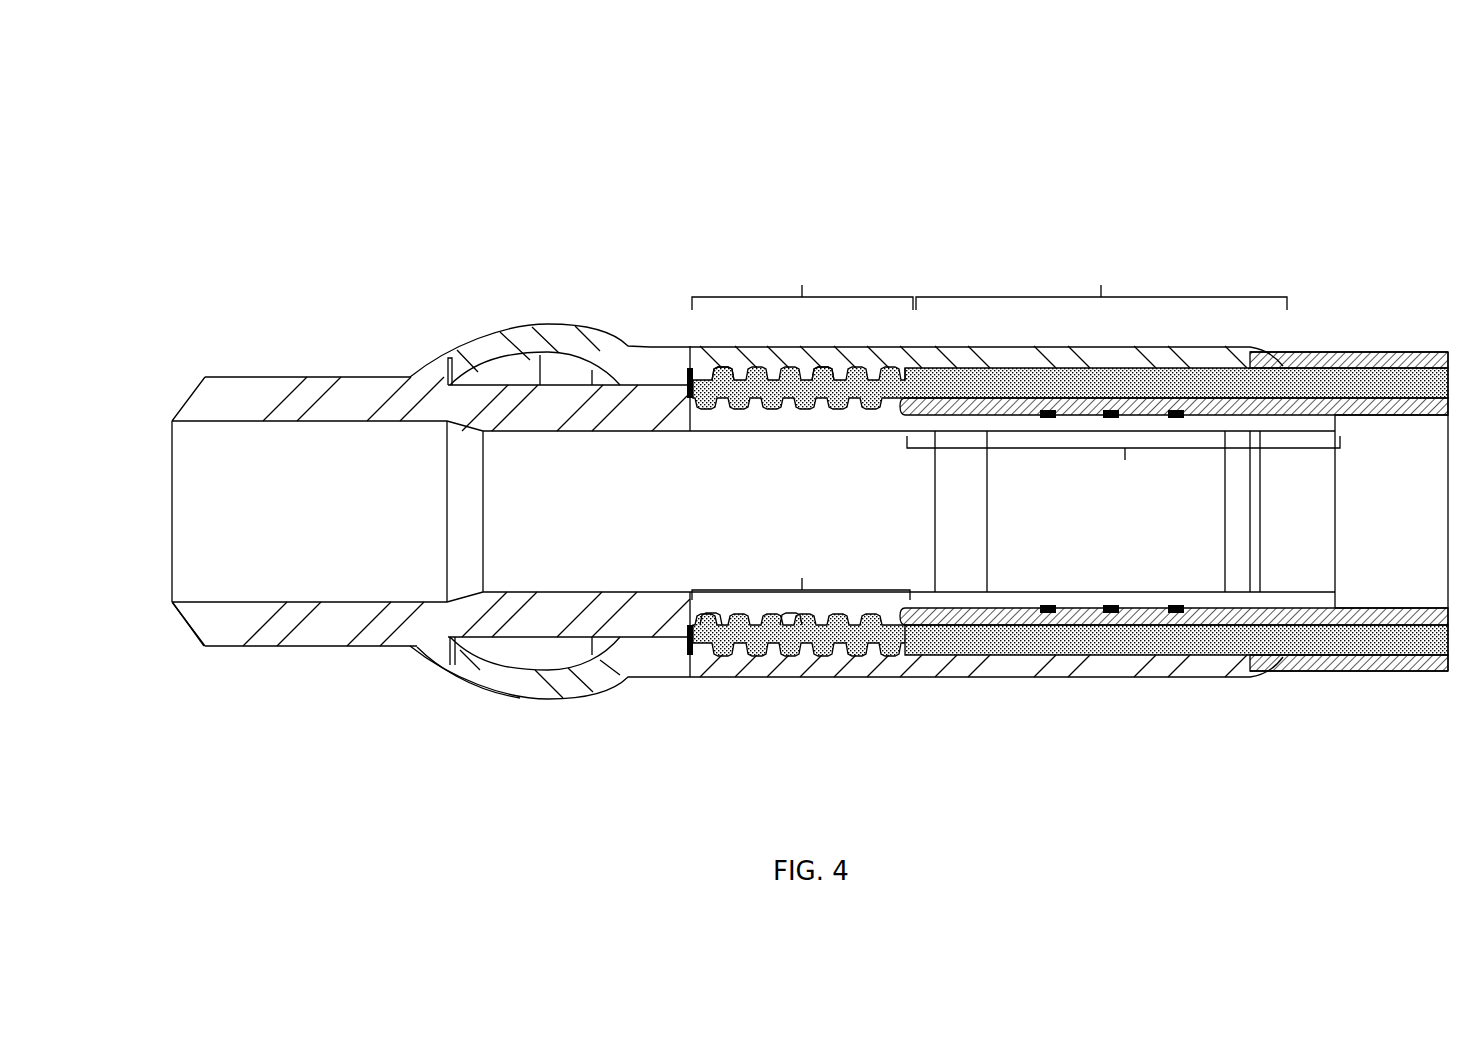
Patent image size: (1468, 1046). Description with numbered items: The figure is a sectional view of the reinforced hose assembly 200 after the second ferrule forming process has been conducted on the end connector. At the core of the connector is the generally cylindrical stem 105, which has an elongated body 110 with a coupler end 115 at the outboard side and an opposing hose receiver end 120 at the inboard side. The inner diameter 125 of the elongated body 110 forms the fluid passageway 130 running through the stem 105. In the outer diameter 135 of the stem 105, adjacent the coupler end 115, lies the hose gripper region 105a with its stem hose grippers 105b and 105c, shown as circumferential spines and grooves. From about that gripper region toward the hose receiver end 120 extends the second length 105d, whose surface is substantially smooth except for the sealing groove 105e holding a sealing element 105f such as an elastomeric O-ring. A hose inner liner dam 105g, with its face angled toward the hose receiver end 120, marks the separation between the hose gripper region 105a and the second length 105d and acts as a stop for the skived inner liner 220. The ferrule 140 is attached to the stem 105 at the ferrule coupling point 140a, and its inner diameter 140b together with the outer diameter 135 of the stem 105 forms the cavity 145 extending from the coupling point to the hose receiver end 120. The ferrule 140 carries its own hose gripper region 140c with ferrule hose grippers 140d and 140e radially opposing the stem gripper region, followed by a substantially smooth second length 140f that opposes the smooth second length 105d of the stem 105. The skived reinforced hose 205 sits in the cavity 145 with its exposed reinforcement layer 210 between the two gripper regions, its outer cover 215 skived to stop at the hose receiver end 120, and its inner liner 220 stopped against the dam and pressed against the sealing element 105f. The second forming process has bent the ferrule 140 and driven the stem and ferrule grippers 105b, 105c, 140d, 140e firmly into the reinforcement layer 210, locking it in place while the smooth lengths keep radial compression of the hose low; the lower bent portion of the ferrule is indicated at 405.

The reinforced hose assembly 200 is at (238, 95).
The stem 105 is at (216, 250).
The elongated body 110 is at (210, 375).
The coupler end 115 is at (196, 631).
The hose receiver end 120 is at (1340, 418).
The inner diameter 125 is at (500, 597).
The fluid passageway 130 is at (308, 529).
The outer diameter 135 is at (563, 384).
The ferrule 140 is at (670, 320).
The ferrule coupling point 140a is at (430, 368).
The ferrule inner diameter 140b is at (510, 356).
The ferrule hose gripper region 140c is at (802, 281).
The ferrule hose gripper 140d is at (712, 656).
The ferrule hose gripper 140e is at (793, 658).
The ferrule second length 140f is at (1101, 281).
The cavity 145 is at (568, 666).
The reinforced hose 205 is at (1383, 349).
The reinforcement layer 210 is at (1407, 647).
The outer cover 215 is at (1433, 356).
The inner liner 220 is at (1330, 619).
The lower hump 405 is at (620, 684).
The hose gripper region 105a is at (1067, 511).
The stem hose gripper 105b is at (832, 402).
The stem hose gripper 105c is at (738, 406).
The second length 105d is at (1174, 511).
The sealing groove 105e is at (1113, 604).
The sealing element 105f is at (1047, 604).
The hose inner liner dam 105g is at (908, 622).